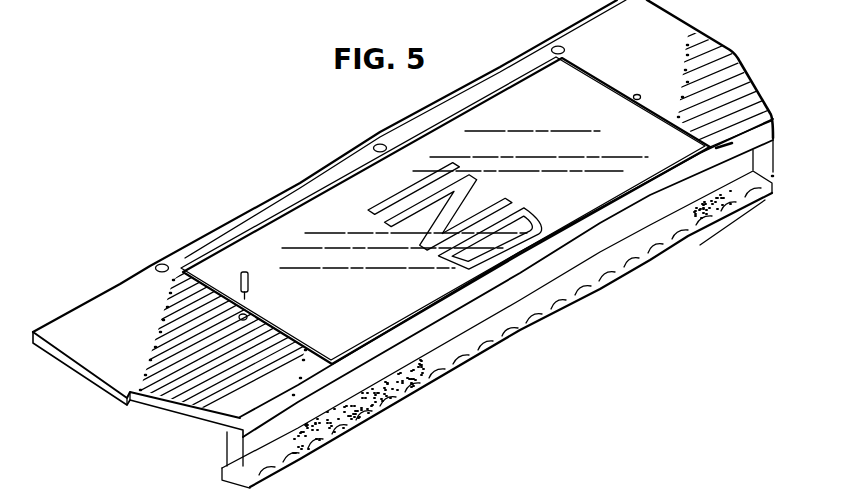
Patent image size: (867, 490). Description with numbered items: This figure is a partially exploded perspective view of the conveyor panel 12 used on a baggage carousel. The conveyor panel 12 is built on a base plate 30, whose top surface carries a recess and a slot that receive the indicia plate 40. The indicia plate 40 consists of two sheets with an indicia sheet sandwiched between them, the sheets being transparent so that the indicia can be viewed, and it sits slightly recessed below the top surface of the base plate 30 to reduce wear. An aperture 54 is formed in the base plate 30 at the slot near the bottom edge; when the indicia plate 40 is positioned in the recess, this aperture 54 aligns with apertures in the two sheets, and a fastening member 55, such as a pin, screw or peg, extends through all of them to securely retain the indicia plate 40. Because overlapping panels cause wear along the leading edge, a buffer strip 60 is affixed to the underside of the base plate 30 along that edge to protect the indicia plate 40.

The conveyor panel 12 is at (487, 27).
The base plate 30 is at (97, 328).
The indicia plate 40 is at (284, 240).
The aperture 54 is at (262, 314).
The fastening member 55 is at (233, 281).
The buffer strip 60 is at (565, 288).